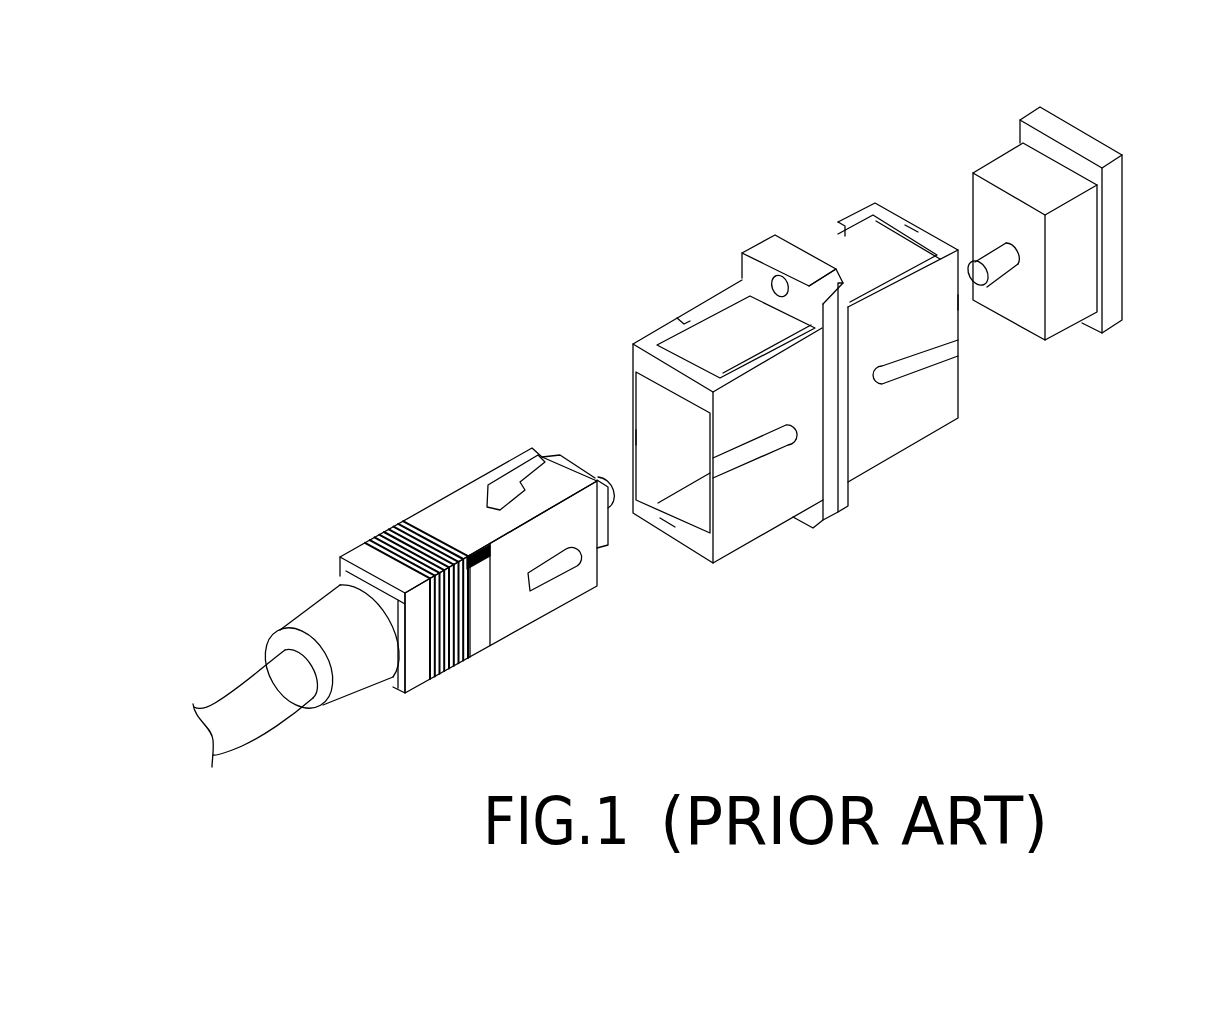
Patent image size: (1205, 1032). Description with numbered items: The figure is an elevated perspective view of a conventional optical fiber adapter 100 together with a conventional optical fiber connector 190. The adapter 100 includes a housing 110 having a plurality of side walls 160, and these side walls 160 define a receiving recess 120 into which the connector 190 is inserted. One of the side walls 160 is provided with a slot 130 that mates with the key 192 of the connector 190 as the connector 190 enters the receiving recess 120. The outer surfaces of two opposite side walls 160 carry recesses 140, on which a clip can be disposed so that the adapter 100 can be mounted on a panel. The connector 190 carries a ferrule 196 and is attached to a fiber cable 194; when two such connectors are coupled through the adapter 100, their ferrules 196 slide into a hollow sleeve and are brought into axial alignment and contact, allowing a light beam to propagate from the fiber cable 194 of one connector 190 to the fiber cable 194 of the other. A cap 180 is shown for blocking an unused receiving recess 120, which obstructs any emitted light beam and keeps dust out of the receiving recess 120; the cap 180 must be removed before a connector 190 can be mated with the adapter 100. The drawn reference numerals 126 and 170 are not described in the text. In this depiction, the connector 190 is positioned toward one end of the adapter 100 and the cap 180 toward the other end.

The fiber adapter 100 is at (701, 155).
The housing 110 is at (630, 318).
The receiving recess 120 is at (693, 478).
The front end of housing 126 is at (633, 360).
The slot 130 is at (763, 447).
The recess 140 is at (733, 315).
The side wall 160 is at (632, 438).
The top opening 170 is at (697, 300).
The cap 180 is at (1103, 135).
The connector 190 is at (378, 490).
The key 192 is at (550, 573).
The fiber cable 194 is at (260, 687).
The ferrule 196 is at (608, 483).